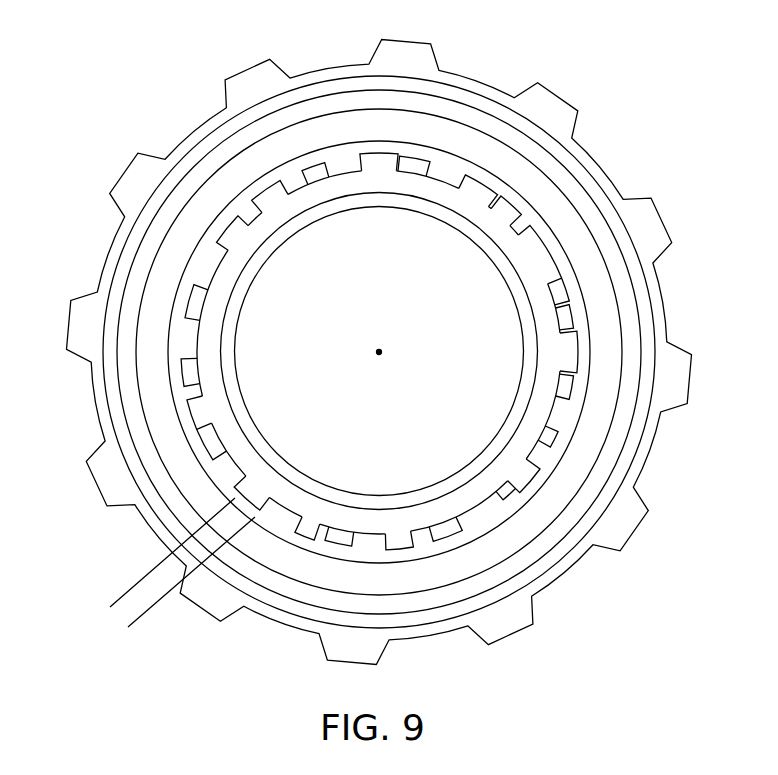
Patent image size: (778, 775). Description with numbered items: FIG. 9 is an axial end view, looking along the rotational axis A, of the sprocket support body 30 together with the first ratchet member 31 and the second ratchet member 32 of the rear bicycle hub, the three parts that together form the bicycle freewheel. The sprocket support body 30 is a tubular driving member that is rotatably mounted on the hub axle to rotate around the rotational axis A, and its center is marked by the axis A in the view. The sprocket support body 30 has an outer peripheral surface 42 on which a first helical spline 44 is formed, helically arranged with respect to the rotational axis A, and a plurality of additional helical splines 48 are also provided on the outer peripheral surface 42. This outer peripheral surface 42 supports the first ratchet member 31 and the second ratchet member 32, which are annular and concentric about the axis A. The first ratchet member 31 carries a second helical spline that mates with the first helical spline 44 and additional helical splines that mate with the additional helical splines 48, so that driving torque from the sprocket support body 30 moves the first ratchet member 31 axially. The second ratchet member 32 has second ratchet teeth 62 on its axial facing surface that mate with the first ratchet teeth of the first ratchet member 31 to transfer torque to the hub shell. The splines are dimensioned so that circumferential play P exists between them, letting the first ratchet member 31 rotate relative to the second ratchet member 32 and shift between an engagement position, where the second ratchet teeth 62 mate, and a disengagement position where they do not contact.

The sprocket support body 30 is at (250, 211).
The first ratchet member 31 is at (485, 78).
The second ratchet member 32 is at (375, 342).
The outer peripheral surface 42 is at (567, 288).
The first helical spline 44 is at (372, 152).
The additional helical splines 48 is at (543, 447).
The second ratchet tooth 62 is at (107, 401).
The rotational axis A is at (383, 356).
The circumferential play P is at (82, 570).